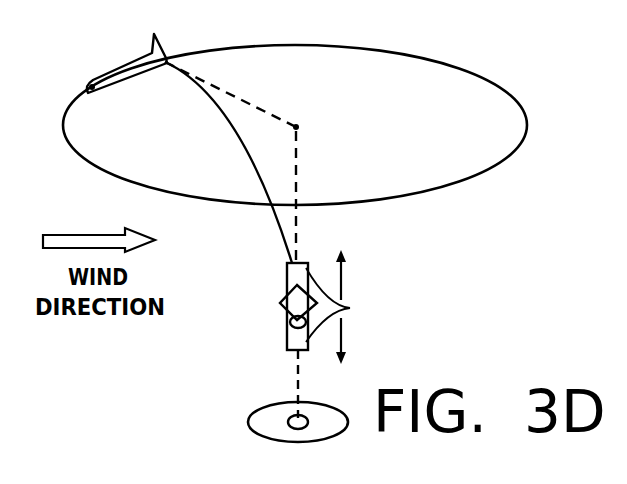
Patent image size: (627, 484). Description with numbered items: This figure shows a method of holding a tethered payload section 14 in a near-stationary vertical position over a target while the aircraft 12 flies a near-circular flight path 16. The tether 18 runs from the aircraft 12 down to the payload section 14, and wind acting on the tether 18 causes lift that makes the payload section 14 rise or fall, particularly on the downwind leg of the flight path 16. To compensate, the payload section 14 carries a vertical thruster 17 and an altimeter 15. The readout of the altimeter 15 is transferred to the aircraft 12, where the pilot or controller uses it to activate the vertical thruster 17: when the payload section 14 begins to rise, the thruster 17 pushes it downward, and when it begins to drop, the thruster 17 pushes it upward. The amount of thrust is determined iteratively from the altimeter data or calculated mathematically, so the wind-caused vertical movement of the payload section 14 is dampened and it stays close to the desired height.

The aircraft 12 is at (113, 73).
The payload section 14 is at (282, 302).
The altimeter 15 is at (290, 324).
The near-circular flight path 16 is at (502, 85).
The vertical thruster 17 is at (350, 308).
The tether 18 is at (233, 133).